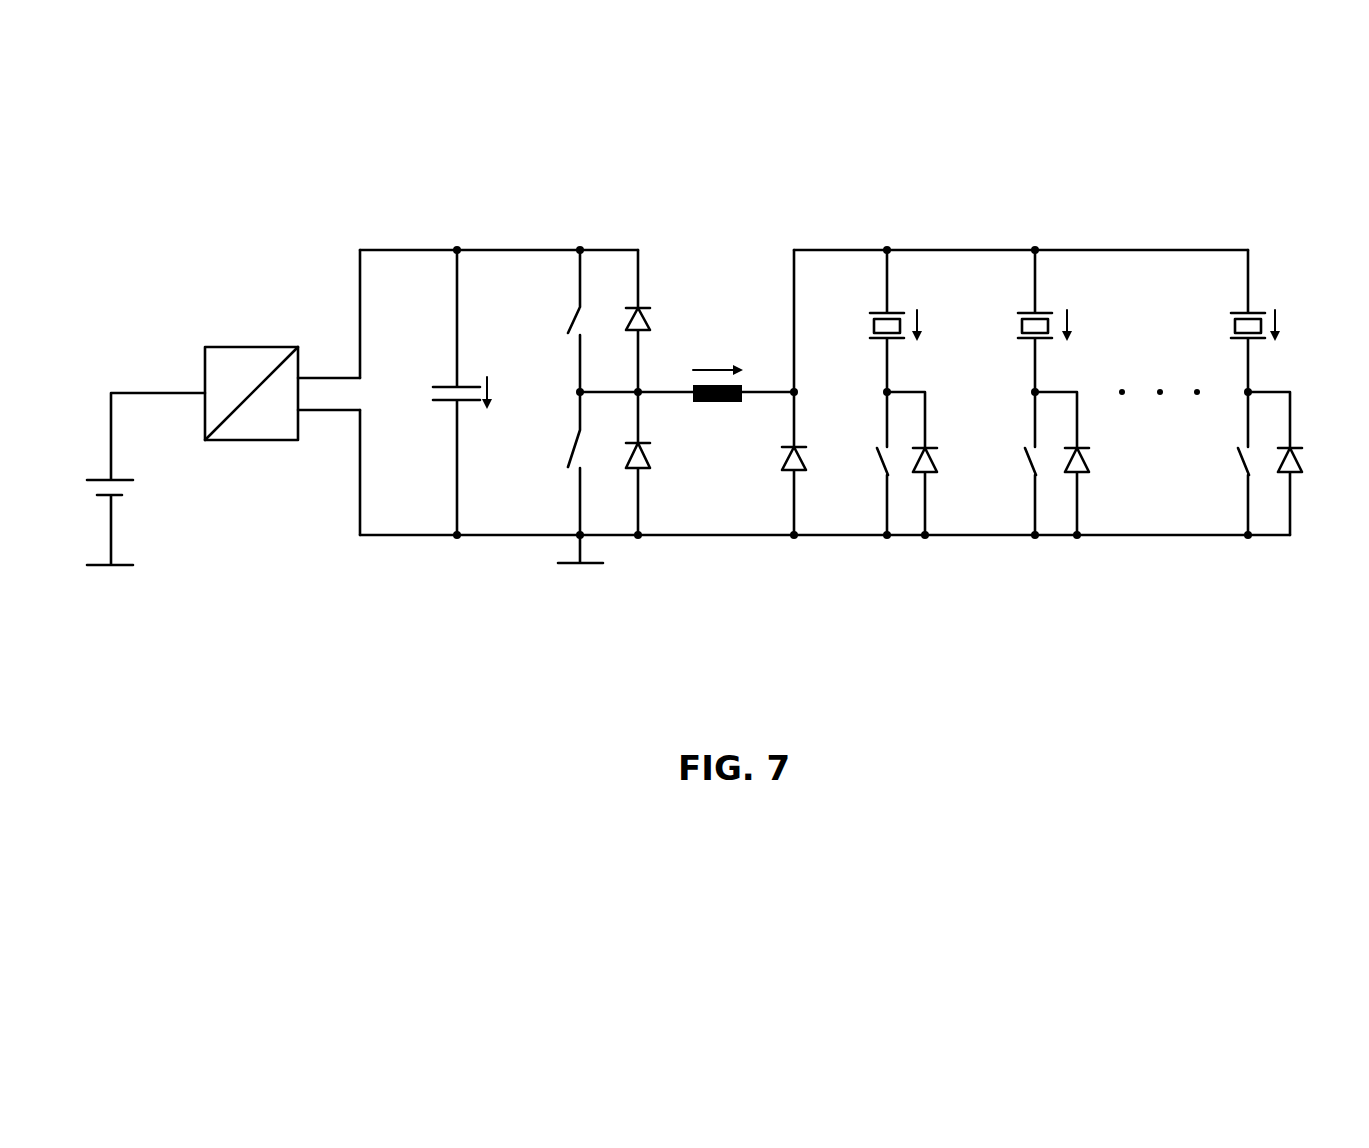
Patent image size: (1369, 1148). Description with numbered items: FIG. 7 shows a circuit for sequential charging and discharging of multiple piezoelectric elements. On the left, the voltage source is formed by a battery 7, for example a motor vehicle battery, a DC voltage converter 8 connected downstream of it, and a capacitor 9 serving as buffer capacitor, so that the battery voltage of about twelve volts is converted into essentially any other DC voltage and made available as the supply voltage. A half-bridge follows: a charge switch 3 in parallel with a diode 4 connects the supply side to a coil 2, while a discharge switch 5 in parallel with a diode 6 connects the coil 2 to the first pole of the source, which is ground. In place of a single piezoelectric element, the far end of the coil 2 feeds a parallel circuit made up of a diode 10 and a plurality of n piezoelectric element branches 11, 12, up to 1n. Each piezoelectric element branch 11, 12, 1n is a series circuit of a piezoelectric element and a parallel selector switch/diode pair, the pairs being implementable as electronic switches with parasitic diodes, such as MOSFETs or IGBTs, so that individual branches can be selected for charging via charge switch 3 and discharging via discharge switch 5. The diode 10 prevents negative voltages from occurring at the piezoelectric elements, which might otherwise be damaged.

The coil 2 is at (687, 382).
The charge switch 3 is at (565, 321).
The diode 4 is at (629, 321).
The discharge switch 5 is at (565, 463).
The diode 6 is at (629, 463).
The battery 7 is at (131, 479).
The DC voltage converter 8 is at (282, 377).
The capacitor 9 is at (467, 392).
The diode 10 is at (780, 392).
The piezoelectric element branch 11 is at (903, 451).
The piezoelectric element branch 12 is at (1052, 451).
The piezoelectric element branch 1n is at (1265, 451).